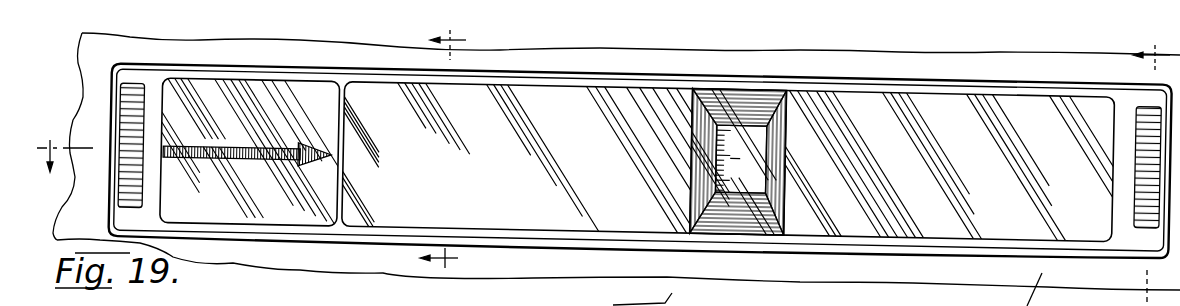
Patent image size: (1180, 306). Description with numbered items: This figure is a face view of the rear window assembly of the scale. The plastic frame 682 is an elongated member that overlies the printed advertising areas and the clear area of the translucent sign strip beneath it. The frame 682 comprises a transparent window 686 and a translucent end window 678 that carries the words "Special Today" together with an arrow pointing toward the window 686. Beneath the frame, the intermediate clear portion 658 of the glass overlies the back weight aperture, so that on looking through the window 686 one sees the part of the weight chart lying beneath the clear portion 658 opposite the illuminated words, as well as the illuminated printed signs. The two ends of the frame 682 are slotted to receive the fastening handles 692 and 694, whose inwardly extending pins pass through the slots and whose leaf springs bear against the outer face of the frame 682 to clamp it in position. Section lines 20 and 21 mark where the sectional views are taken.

The section line 20- 20 is at (65, 146).
The section line 21- 21 is at (800, 149).
The intermediate clear portion 658 is at (742, 98).
The display panel 678 is at (228, 221).
The plastic frame 682 is at (372, 236).
The transparent window 686 is at (597, 229).
The fastening handle 692 is at (132, 95).
The fastening handle 694 is at (1143, 229).